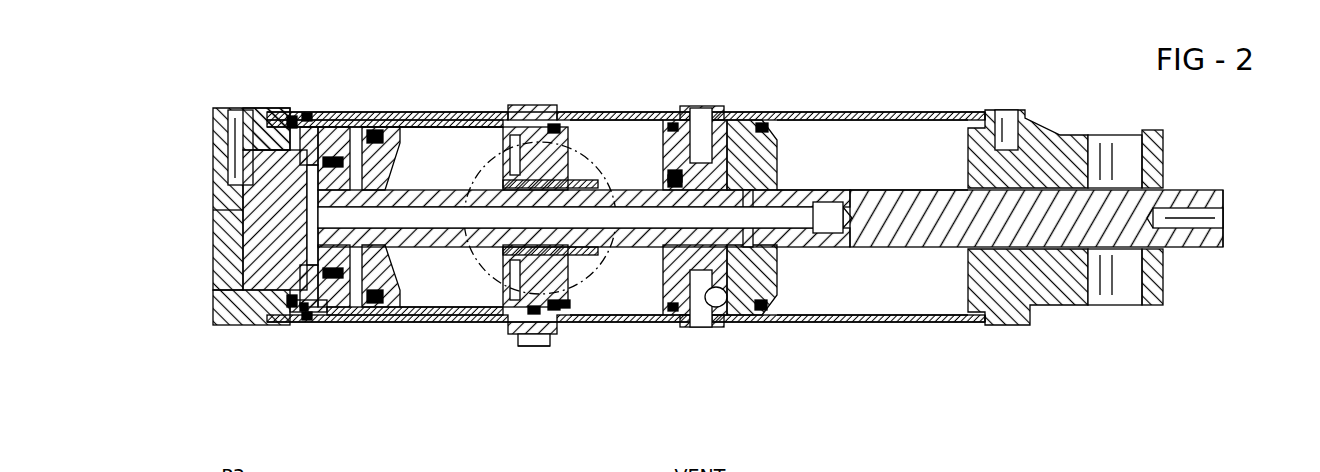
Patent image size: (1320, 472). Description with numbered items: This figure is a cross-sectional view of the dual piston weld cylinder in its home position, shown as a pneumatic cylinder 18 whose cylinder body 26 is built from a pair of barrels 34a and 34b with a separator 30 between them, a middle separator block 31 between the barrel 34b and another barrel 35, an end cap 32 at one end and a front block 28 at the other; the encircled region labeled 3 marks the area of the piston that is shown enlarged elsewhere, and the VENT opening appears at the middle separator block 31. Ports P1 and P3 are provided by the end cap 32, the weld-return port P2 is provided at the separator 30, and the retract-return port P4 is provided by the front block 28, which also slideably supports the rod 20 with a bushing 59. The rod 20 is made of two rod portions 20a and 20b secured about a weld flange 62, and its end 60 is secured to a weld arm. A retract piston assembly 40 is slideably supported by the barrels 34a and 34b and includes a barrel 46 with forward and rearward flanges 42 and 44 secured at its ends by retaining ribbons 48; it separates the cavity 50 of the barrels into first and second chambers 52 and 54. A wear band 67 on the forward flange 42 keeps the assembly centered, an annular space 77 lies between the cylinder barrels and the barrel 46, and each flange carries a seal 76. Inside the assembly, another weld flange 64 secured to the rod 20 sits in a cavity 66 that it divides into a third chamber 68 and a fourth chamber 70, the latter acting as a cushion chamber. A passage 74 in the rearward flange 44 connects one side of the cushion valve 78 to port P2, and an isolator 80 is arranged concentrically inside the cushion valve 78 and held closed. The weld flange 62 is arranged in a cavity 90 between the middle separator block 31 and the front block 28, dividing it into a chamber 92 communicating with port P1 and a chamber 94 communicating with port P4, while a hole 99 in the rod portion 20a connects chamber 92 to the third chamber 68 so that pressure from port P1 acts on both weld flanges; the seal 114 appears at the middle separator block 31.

The pneumatic cylinder 18 is at (910, 84).
The rod 20 is at (770, 191).
The rod portion 20a is at (432, 192).
The rod portion 20b is at (888, 208).
The cylinder body 26 is at (477, 108).
The front block 28 is at (1036, 179).
The separator 30 is at (537, 108).
The middle separator block 31 is at (710, 215).
The end cap 32 is at (235, 160).
The barrel 34a is at (455, 112).
The barrel 34b is at (580, 112).
The barrel 35 is at (872, 112).
The retract piston assembly 40 is at (443, 122).
The forward flange 42 is at (330, 127).
The rearward flange 44 is at (565, 300).
The barrel 46 is at (473, 124).
The retaining ribbons 48 is at (336, 116).
The cavity 50 is at (632, 135).
The first chamber 52 is at (245, 295).
The second chamber 54 is at (628, 300).
The bushing 59 is at (1112, 257).
The end 60 is at (1203, 197).
The weld flange 62 is at (770, 147).
The weld flange 64 is at (387, 127).
The cavity 66 is at (437, 323).
The wear band 67 is at (317, 318).
The third chamber 68 is at (250, 223).
The fourth chamber 70 is at (413, 297).
The passage 74 is at (512, 108).
The seal 76 is at (297, 120).
The annular space 77 is at (418, 118).
The cushion valve 78 is at (500, 262).
The isolator 80 is at (568, 255).
The cavity 90 is at (852, 297).
The chamber 92 is at (770, 275).
The chamber 94 is at (881, 290).
The hole 99 is at (757, 248).
The seal 114 is at (667, 175).
The detail circle FIG. 3 is at (456, 295).
The weld-forward port P1 is at (700, 332).
The weld-return port P2 is at (536, 350).
The port P3 is at (240, 107).
The retract-return port P4 is at (1008, 107).
The vent VENT is at (701, 105).